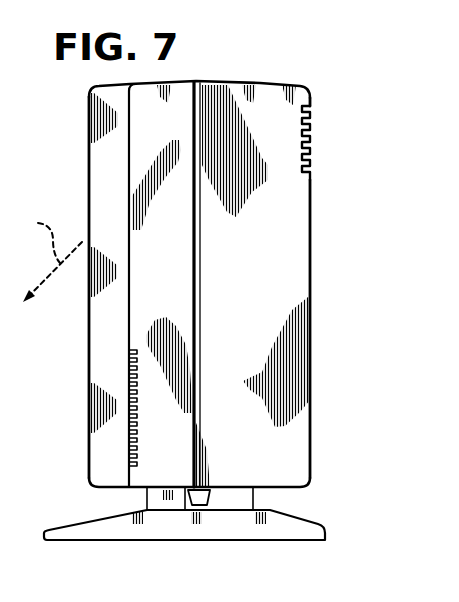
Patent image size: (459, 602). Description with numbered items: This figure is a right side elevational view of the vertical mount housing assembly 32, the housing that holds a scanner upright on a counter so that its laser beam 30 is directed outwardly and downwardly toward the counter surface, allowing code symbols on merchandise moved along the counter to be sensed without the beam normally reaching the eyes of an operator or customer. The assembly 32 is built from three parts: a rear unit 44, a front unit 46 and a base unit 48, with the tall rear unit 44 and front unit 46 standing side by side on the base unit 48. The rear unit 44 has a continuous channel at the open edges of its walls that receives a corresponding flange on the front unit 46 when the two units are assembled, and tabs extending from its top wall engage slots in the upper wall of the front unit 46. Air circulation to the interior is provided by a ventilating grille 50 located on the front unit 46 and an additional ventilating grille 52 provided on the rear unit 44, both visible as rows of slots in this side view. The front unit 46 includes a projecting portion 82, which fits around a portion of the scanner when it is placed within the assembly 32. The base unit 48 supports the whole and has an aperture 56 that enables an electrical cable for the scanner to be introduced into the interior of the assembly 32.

The beam 30 is at (48, 260).
The vertical mount housing assembly 32 is at (240, 58).
The rear unit 44 is at (305, 251).
The front unit 46 is at (97, 364).
The base unit 48 is at (164, 542).
The ventilating grille 50 is at (128, 450).
The additional ventilating grille 52 is at (312, 125).
The aperture 56 is at (212, 493).
The projecting portion 82 is at (97, 163).